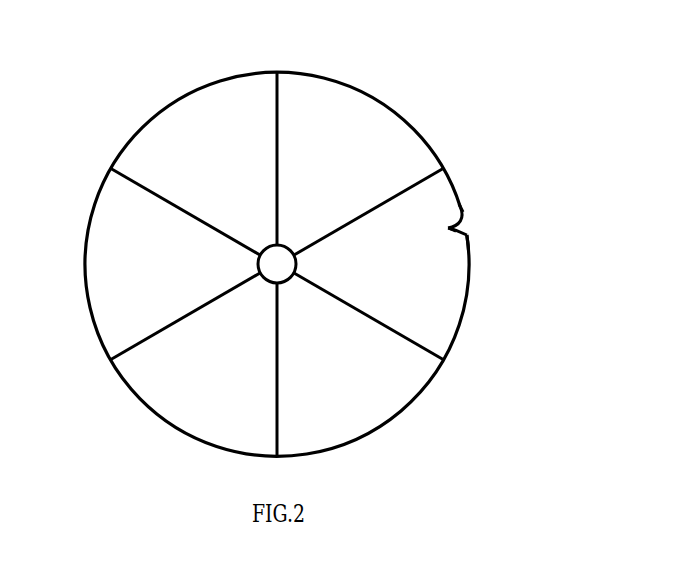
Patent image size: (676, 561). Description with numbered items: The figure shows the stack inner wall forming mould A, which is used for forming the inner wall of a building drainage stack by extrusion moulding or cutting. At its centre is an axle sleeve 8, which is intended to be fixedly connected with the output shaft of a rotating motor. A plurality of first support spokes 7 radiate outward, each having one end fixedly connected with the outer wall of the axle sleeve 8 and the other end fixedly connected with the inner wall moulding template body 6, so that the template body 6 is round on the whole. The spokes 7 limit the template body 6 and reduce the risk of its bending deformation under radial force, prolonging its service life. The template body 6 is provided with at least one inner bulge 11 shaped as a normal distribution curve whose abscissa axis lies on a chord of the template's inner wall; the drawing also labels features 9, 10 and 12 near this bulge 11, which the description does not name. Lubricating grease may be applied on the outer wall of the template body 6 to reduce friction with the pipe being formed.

The stack inner wall forming mould A is at (383, 75).
The inner wall moulding template body 6 is at (183, 87).
The first support spokes 7 is at (143, 188).
The axle sleeve 8 is at (285, 243).
The flap 9 is at (446, 227).
The flap edge 10 is at (463, 209).
The inner bulge 11 is at (450, 242).
The notch 12 is at (460, 234).